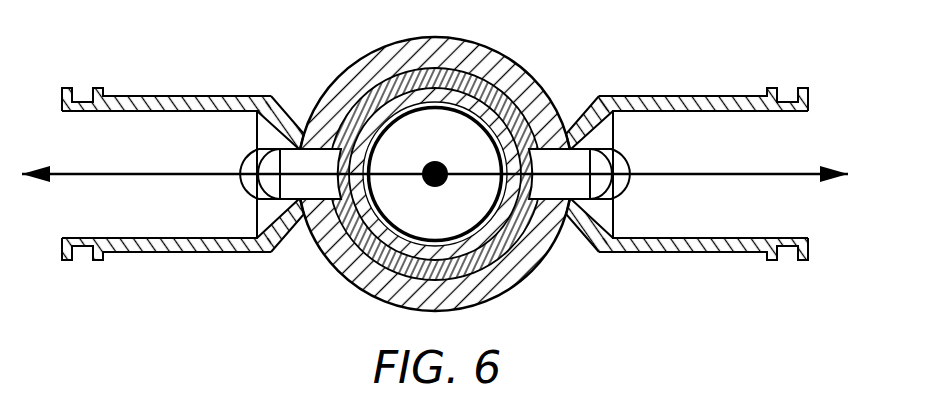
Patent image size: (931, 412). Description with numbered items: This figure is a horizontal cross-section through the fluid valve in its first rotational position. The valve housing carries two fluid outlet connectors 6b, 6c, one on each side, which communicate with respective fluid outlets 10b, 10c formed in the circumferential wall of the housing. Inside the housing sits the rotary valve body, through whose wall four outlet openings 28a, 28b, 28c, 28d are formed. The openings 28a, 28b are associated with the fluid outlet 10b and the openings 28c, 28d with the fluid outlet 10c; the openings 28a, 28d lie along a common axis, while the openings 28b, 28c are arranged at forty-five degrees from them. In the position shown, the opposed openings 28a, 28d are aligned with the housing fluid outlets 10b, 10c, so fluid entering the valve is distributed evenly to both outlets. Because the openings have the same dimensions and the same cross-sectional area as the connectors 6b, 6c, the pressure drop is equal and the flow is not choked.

The fluid outlet connector 6b is at (178, 253).
The fluid outlet connector 6c is at (690, 253).
The fluid outlet 10b is at (307, 133).
The fluid outlet 10c is at (563, 133).
The outlet opening 28a is at (518, 136).
The outlet opening 28b is at (502, 232).
The outlet opening 28c is at (362, 234).
The outlet opening 28d is at (352, 137).